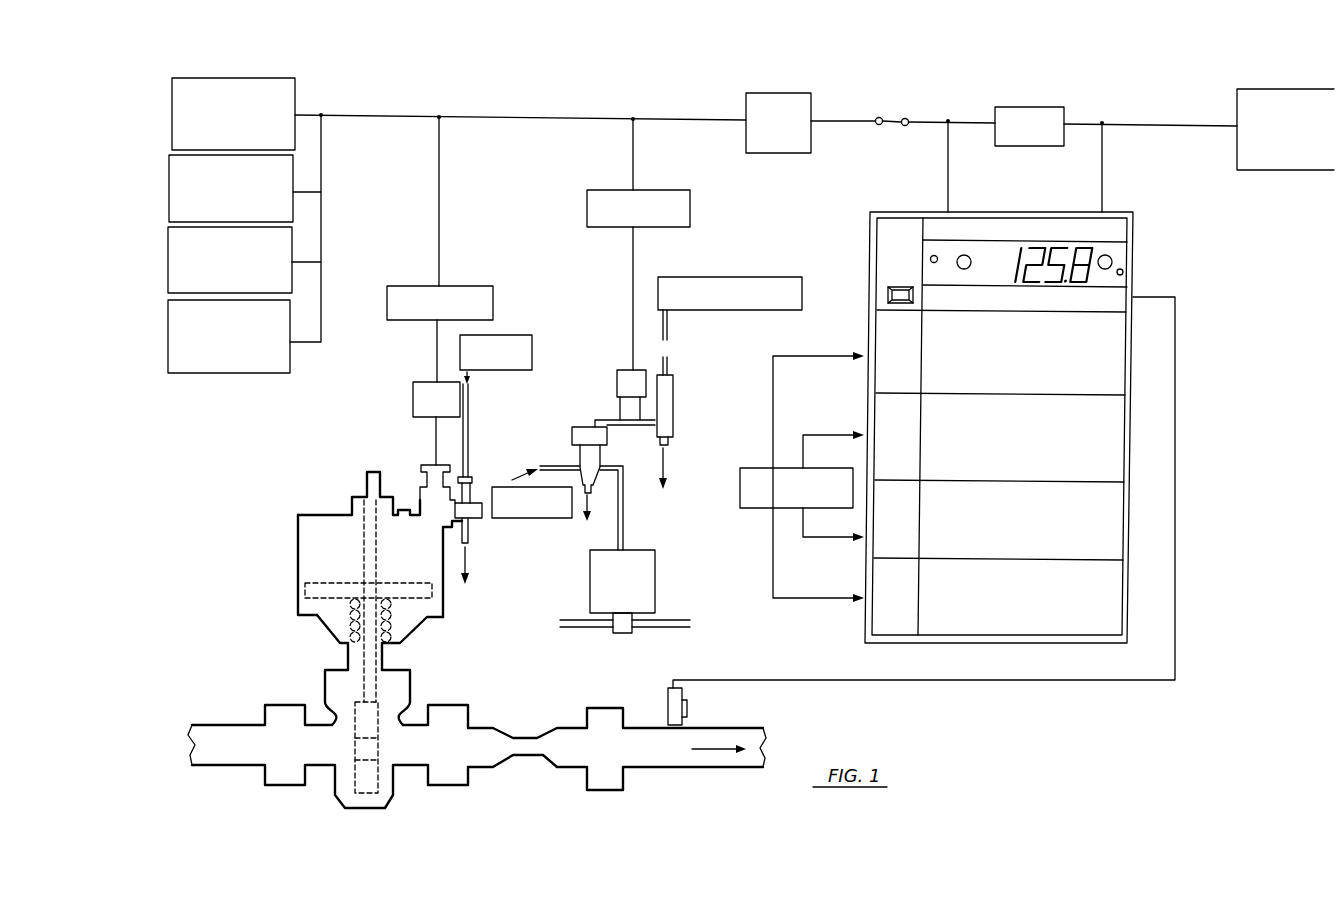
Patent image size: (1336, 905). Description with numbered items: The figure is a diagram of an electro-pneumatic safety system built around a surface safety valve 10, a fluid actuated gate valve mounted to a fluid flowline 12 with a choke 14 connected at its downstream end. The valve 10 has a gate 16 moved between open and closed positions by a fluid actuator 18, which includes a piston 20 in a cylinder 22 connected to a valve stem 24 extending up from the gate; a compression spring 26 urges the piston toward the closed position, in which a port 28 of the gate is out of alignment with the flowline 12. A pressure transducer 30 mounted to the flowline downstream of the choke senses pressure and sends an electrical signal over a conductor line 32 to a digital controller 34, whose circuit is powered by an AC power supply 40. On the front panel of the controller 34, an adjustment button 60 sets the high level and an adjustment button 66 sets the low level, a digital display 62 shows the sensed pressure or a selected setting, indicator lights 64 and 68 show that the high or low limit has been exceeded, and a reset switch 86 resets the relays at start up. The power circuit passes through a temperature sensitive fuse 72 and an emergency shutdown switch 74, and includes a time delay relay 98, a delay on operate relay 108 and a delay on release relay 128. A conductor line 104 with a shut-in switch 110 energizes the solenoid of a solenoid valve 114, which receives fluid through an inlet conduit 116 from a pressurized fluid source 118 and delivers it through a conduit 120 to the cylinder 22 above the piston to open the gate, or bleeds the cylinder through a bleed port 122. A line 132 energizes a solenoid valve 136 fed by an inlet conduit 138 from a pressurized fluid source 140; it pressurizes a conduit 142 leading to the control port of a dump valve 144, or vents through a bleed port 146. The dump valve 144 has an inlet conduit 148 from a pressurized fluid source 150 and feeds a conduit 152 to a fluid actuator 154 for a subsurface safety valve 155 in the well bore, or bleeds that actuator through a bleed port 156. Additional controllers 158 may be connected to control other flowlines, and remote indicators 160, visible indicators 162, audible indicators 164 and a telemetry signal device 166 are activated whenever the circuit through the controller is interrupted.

The surface safety valve 10 is at (300, 682).
The fluid flowline 12 is at (245, 735).
The choke 14 is at (503, 753).
The gate 16 is at (368, 708).
The fluid actuator 18 is at (456, 610).
The piston 20 is at (305, 590).
The cylinder 22 is at (312, 537).
The valve stem 24 is at (347, 653).
The compression spring 26 is at (403, 638).
The port 28 is at (382, 752).
The pressure transducer 30 is at (671, 712).
The conductor line 32 is at (838, 678).
The digital controller 34 is at (1133, 224).
The AC power supply 40 is at (1252, 107).
The adjustment button 60 is at (1105, 283).
The digital display 62 is at (1033, 282).
The indicator light 64 is at (1123, 273).
The adjustment button 66 is at (964, 255).
The indicator light 68 is at (934, 255).
The temperature sensitive fuse 72 is at (879, 117).
The emergency shutdown switch 74 is at (770, 107).
The reset switch 86 is at (888, 292).
The time delay relay 98 is at (1030, 117).
The conductor line 104 is at (440, 203).
The delay on operate relay 108 is at (418, 295).
The shut-in switch 110 is at (426, 402).
The solenoid valve 114 is at (468, 522).
The inlet conduit 116 is at (469, 443).
The pressurized fluid source 118 is at (532, 343).
The conduit 120 is at (452, 528).
The bleed port 122 is at (466, 548).
The delay on release relay 128 is at (687, 208).
The line 132 is at (630, 296).
The solenoid valve 136 is at (667, 412).
The inlet conduit 138 is at (670, 370).
The pressurized fluid source 140 is at (697, 278).
The conduit 142 is at (614, 418).
The dump valve 144 is at (594, 456).
The bleed port 146 is at (669, 445).
The inlet conduit 148 is at (566, 464).
The pressurized fluid source 150 is at (523, 519).
The conduit 152 is at (623, 520).
The fluid actuator 154 is at (653, 567).
The subsurface safety valve 155 is at (627, 636).
The bleed port 156 is at (586, 518).
The additional controllers 158 is at (742, 506).
The remote indicators 160 is at (233, 90).
The visible indicators 162 is at (277, 178).
The audible indicators 164 is at (273, 249).
The telemetry signal device 166 is at (216, 362).